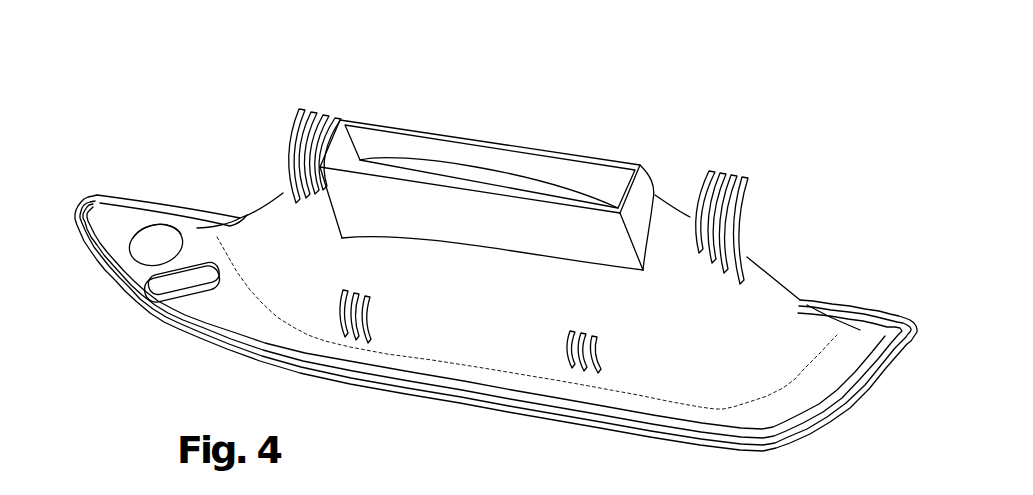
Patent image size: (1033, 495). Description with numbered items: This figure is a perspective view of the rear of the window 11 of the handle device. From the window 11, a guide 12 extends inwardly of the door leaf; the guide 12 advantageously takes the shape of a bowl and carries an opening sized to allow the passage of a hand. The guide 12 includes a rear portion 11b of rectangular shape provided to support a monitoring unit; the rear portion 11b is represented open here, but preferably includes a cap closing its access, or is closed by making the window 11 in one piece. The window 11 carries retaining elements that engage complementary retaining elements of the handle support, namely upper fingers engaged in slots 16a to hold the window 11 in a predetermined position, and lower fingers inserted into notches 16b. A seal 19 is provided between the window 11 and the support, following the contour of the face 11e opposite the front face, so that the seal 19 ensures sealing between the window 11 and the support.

The window 11 is at (123, 143).
The rear portion 11b is at (470, 133).
The opposite face 11e is at (110, 217).
The guide 12 is at (277, 222).
The slots 16a is at (313, 112).
The notches 16b is at (352, 337).
The seal 19 is at (93, 240).